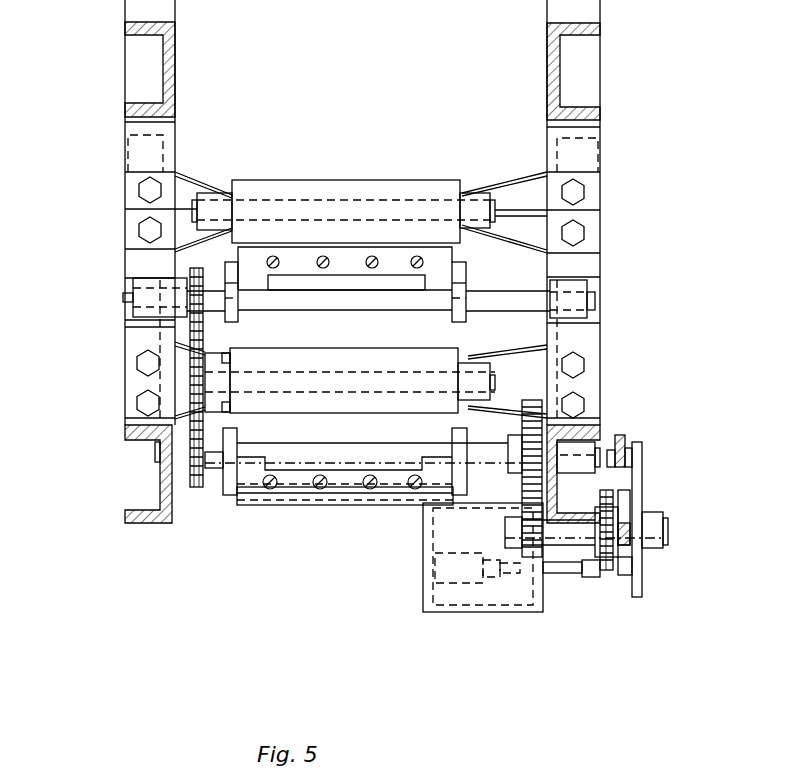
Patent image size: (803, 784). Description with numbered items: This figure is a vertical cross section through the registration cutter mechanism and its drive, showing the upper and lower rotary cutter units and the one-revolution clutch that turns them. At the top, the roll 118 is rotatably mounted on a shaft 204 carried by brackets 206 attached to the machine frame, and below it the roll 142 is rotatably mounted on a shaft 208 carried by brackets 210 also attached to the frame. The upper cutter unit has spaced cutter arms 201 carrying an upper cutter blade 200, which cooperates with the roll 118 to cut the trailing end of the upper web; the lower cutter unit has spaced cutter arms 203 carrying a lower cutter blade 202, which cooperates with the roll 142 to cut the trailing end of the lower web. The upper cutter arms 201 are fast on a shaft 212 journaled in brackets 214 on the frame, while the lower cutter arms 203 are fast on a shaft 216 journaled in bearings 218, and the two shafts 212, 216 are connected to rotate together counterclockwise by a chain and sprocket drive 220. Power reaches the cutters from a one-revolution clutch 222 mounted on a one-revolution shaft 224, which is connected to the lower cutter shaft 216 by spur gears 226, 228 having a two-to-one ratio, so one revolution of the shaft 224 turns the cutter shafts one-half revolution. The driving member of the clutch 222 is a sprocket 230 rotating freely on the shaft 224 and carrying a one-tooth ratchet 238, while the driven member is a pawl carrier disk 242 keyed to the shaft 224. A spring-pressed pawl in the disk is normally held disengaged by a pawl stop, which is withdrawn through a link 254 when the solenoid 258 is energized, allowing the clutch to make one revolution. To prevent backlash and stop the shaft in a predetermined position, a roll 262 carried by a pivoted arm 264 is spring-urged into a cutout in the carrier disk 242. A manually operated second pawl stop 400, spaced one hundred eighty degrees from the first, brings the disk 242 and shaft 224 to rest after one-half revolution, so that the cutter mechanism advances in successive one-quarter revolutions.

The roll 118 is at (365, 180).
The roll 142 is at (310, 406).
The upper cutter blade 200 is at (395, 247).
The upper cutter arms 201 is at (238, 300).
The lower cutter blade 202 is at (345, 505).
The lower cutter arms 203 is at (223, 478).
The shaft 204 is at (283, 198).
The brackets 206 is at (205, 193).
The shaft 208 is at (380, 360).
The brackets 210 is at (213, 352).
The upper cutter shaft 212 is at (337, 302).
The brackets 214 is at (133, 288).
The lower cutter shaft 216 is at (312, 452).
The bearings 218 is at (160, 463).
The chain and sprocket drive 220 is at (190, 343).
The one-revolution clutch 222 is at (658, 490).
The one-revolution shaft 224 is at (668, 530).
The spur gear 226 is at (533, 558).
The spur gear 228 is at (532, 400).
The sprocket 230 is at (602, 568).
The one-tooth ratchet 238 is at (622, 565).
The pawl carrier disk 242 is at (642, 478).
The link 254 is at (558, 573).
The solenoid 258 is at (453, 582).
The roll 262 is at (640, 445).
The arm 264 is at (620, 437).
The second pawl stop 400 is at (628, 553).